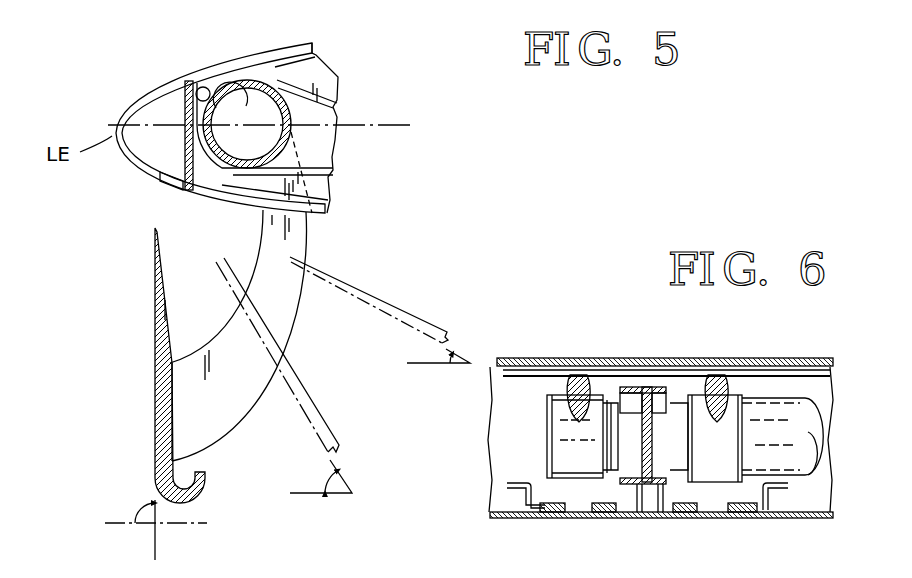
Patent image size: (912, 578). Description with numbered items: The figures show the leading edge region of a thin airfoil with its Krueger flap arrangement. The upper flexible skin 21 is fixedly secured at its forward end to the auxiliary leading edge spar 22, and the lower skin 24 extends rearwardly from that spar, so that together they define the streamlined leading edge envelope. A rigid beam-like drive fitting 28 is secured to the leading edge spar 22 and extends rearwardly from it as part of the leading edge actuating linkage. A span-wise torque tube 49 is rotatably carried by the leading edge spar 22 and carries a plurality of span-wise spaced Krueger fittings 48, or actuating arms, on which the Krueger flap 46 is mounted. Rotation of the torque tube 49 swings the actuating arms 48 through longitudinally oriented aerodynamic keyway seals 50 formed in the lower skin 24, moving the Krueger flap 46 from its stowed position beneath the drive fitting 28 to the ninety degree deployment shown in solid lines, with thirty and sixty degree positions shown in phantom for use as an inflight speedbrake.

In FIG. 5, the upper flexible skin 21 is at (288, 46).
In FIG. 6, the upper flexible skin 21 is at (626, 360).
In FIG. 5, the auxiliary leading edge spar 22 is at (182, 113).
In FIG. 6, the lower skin 24 is at (790, 520).
In FIG. 5, the drive fitting 28 is at (323, 80).
In FIG. 6, the drive fitting 28 is at (650, 438).
In FIG. 5, the Krueger flap 46 is at (153, 362).
In FIG. 5, the Krueger fitting 48 is at (285, 313).
In FIG. 6, the Krueger fitting 48 is at (572, 376).
In FIG. 5, the torque tube 49 is at (235, 92).
In FIG. 6, the torque tube 49 is at (810, 428).
In FIG. 6, the aerodynamic keyway seal 50 is at (578, 520).